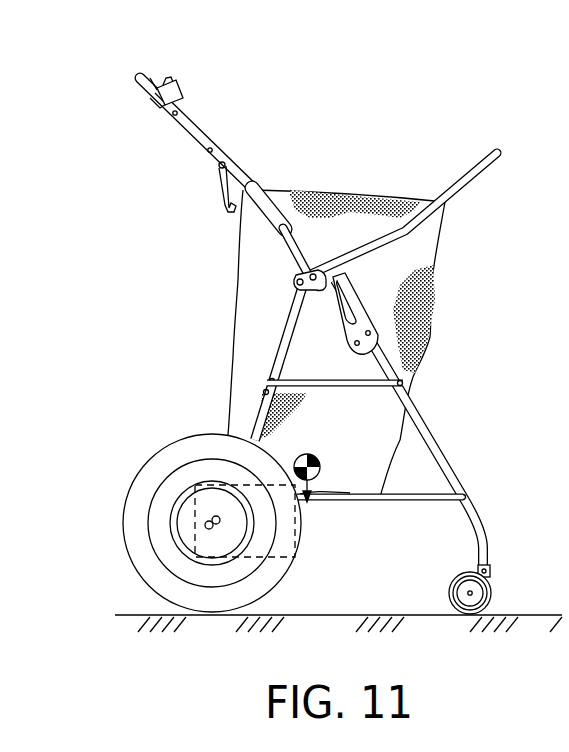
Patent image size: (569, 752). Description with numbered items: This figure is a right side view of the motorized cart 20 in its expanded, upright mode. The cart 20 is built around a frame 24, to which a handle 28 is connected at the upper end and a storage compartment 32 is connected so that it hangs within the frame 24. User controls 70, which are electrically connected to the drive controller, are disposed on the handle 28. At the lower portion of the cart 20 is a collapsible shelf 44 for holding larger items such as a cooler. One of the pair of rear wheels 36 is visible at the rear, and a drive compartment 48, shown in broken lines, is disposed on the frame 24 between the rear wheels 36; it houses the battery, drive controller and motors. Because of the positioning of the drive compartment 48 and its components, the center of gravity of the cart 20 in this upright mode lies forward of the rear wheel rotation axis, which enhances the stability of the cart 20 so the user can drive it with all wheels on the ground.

The motorized cart 20 is at (160, 194).
The frame 24 is at (207, 135).
The handle 28 is at (137, 75).
The storage compartment 32 is at (427, 328).
The rear wheels 36 is at (147, 450).
The collapsible shelf 44 is at (418, 502).
The drive compartment 48 is at (275, 557).
The user controls 70 is at (183, 103).